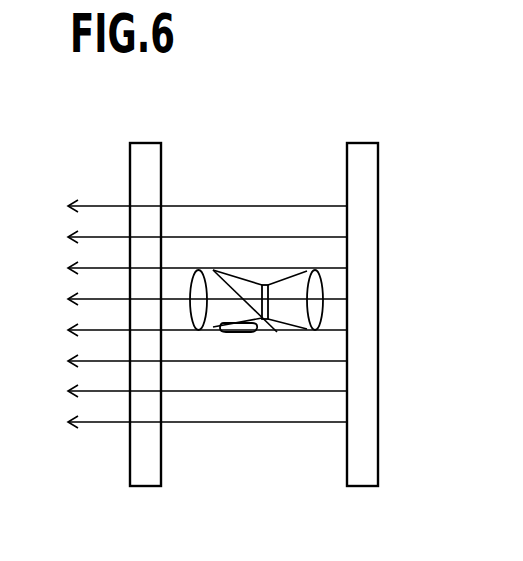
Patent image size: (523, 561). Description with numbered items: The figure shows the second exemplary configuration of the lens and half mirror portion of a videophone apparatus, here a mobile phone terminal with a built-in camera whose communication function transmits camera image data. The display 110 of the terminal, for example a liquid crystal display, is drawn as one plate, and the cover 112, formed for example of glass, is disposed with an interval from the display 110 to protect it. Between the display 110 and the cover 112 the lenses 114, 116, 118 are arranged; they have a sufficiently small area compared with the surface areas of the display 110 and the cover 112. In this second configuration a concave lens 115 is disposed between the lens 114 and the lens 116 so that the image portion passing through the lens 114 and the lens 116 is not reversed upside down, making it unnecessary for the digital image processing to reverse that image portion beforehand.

The display 110 is at (363, 293).
The cover 112 is at (145, 293).
The lens 114 is at (321, 287).
The concave lens 115 is at (261, 281).
The lens 116 is at (187, 287).
The lens 118 is at (240, 344).